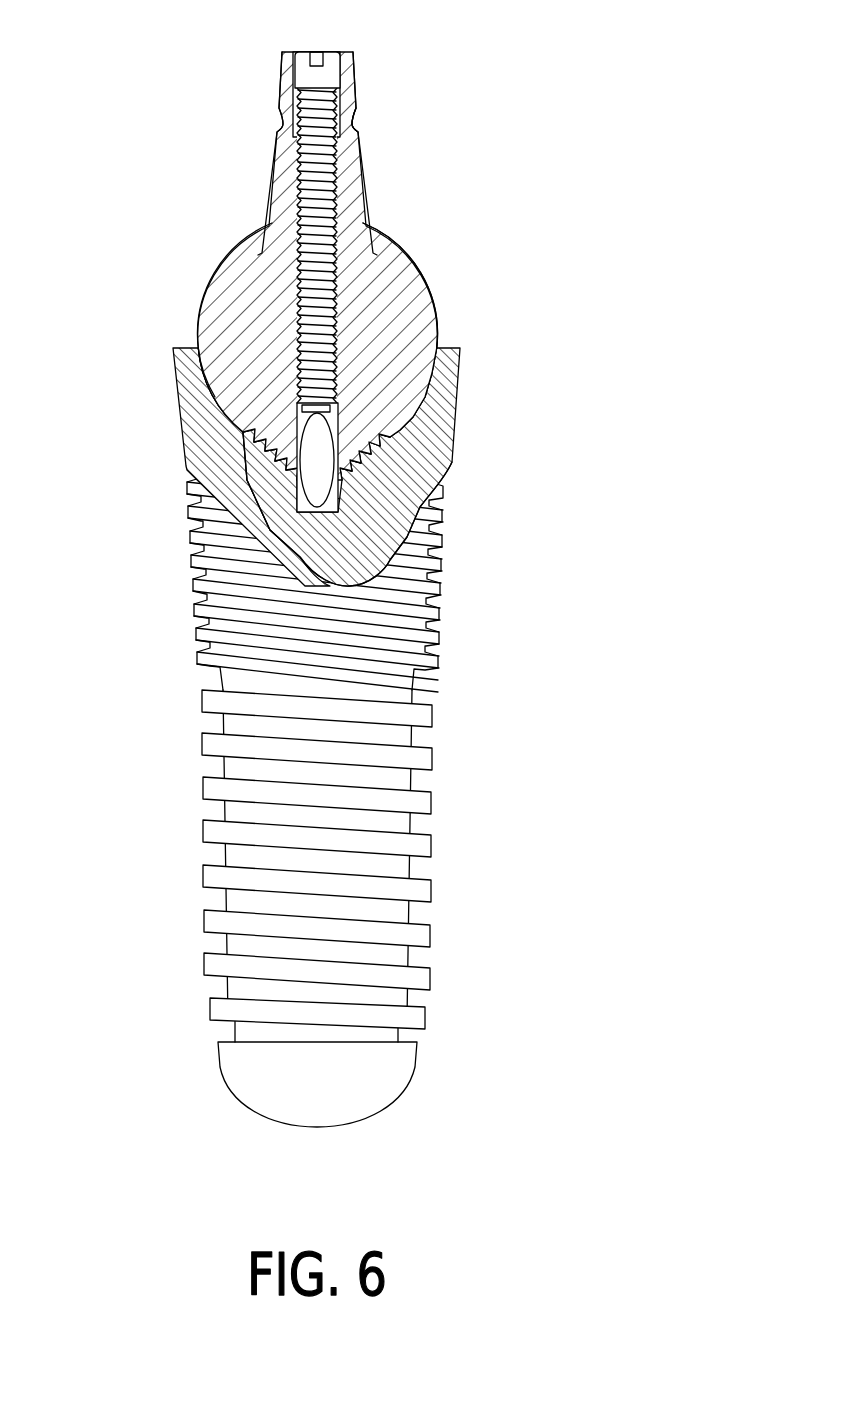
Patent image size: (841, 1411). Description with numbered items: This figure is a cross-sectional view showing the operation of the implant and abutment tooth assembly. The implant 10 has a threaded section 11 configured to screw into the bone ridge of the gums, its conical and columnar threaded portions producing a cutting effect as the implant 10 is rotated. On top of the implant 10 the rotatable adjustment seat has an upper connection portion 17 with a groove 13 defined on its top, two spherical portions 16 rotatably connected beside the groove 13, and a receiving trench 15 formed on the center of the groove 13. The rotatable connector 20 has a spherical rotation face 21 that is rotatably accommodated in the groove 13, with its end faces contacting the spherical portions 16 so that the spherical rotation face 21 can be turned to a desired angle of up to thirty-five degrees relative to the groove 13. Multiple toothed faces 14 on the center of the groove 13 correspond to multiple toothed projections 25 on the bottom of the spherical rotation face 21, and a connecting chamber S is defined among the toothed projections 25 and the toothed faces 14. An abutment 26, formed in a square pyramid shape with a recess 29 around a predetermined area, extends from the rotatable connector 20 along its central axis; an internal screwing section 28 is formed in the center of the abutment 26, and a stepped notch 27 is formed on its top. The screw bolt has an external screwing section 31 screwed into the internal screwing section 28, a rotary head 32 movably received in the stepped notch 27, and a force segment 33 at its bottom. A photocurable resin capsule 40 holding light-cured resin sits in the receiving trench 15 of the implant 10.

The implant 10 is at (137, 560).
The threaded section 11 is at (372, 710).
The groove 13 is at (400, 345).
The toothed faces 14 is at (250, 462).
The receiving trench 15 is at (407, 547).
The spherical portions 16 is at (408, 270).
The upper connection portion 17 is at (185, 382).
The rotatable connector 20 is at (238, 212).
The spherical rotation face 21 is at (233, 283).
The toothed projections 25 is at (203, 347).
The abutment 26 is at (357, 177).
The stepped notch 27 is at (297, 68).
The internal screwing section 28 is at (337, 202).
The recess 29 is at (355, 120).
The external screwing section 31 is at (313, 130).
The rotary head 32 is at (332, 62).
The force segment 33 is at (345, 412).
The photocurable resin capsule 40 is at (322, 447).
The connecting chamber S is at (420, 503).